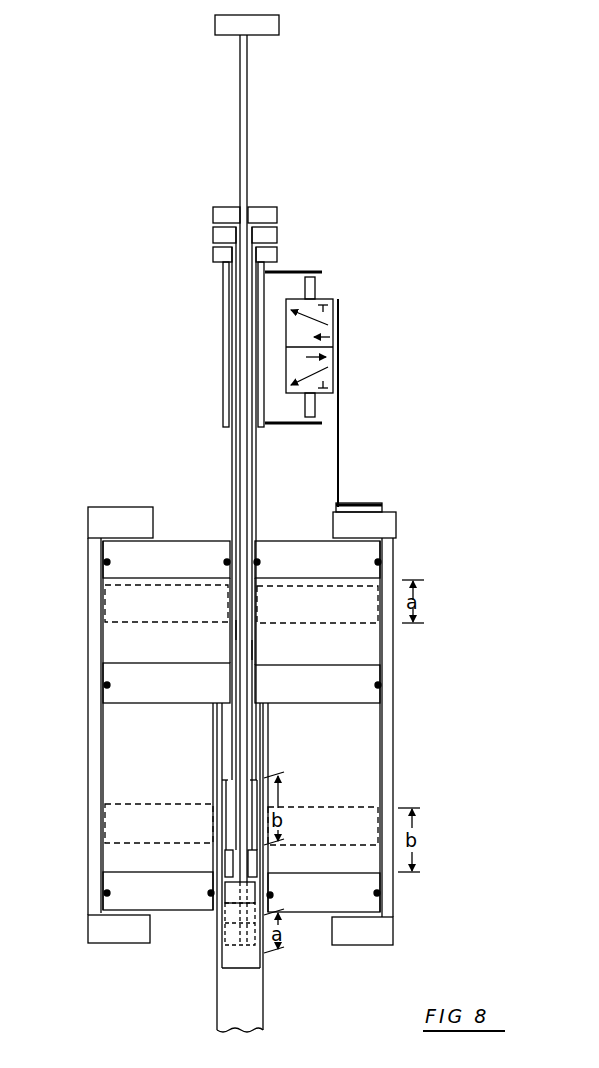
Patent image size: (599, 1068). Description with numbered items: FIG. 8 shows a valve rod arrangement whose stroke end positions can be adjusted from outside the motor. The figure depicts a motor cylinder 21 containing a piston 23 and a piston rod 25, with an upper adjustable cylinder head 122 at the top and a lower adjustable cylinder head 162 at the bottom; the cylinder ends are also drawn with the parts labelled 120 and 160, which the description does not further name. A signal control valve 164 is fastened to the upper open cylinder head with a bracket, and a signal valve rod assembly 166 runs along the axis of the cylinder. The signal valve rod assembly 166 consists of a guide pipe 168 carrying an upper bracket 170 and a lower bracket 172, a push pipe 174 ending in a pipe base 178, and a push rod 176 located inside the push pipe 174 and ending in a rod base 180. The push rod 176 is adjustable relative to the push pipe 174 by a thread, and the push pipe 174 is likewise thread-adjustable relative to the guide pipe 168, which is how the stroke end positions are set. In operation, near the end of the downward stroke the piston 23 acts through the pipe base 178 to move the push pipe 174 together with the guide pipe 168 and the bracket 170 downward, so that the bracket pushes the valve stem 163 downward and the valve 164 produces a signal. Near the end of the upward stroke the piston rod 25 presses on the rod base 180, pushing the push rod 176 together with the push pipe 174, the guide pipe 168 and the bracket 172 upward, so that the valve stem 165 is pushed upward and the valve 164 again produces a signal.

The motor cylinder 21 is at (95, 735).
The piston 23 is at (179, 687).
The piston rod 25 is at (232, 1013).
The upper end flange 120 is at (143, 520).
The upper adjustable cylinder head 122 is at (171, 573).
The lower end flange 160 is at (135, 927).
The lower adjustable cylinder head 162 is at (157, 888).
The valve stem 163 is at (316, 285).
The signal control valve 164 is at (313, 328).
The valve stem 165 is at (316, 410).
The signal valve rod assembly 166 is at (244, 340).
The guide pipe 168 is at (227, 360).
The bracket 170 is at (292, 270).
The bracket 172 is at (278, 427).
The push pipe 174 is at (250, 655).
The push rod 176 is at (243, 632).
The pipe base 178 is at (250, 862).
The rod base 180 is at (250, 887).